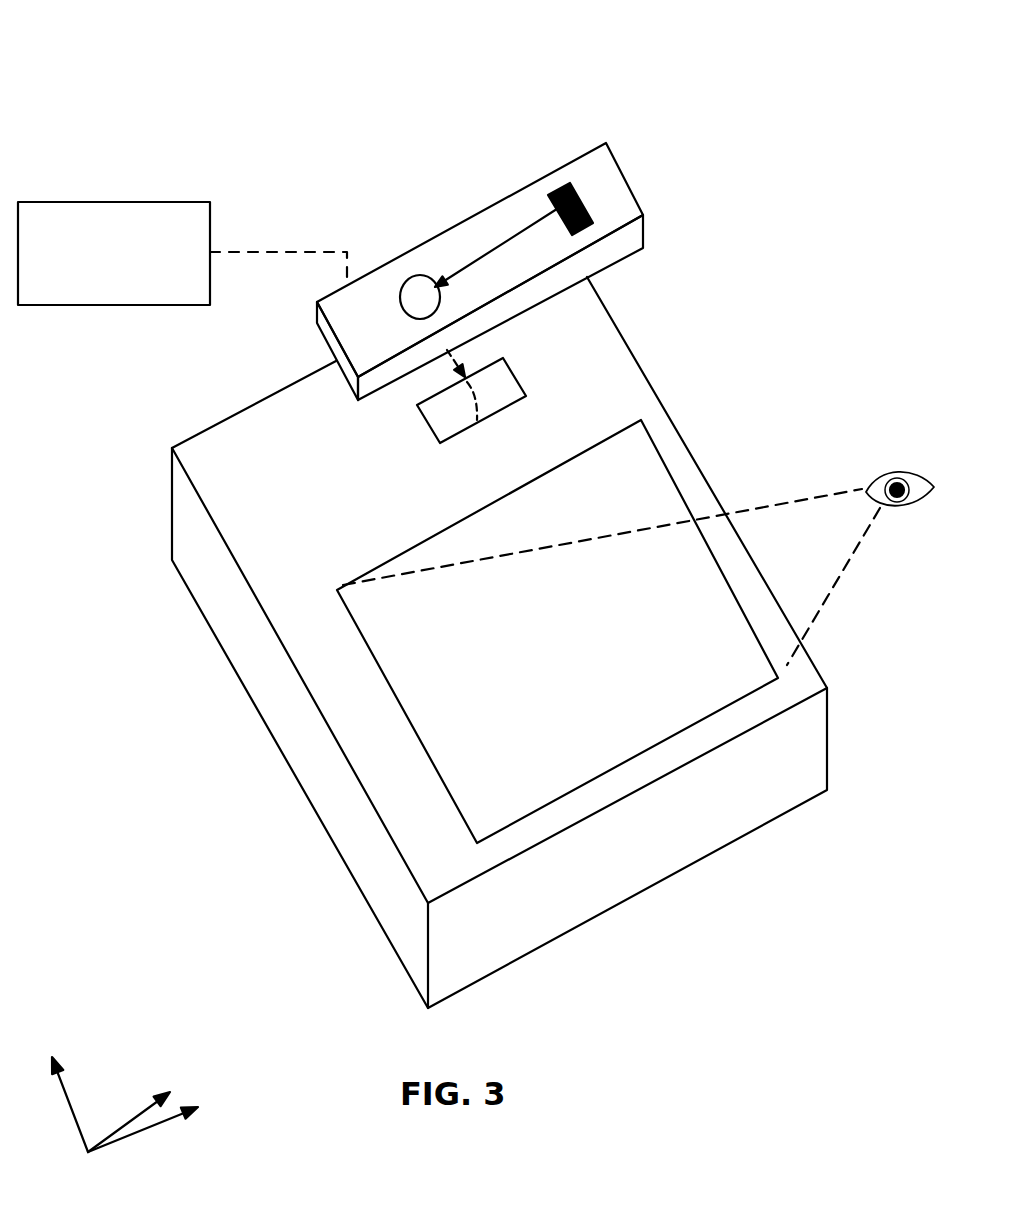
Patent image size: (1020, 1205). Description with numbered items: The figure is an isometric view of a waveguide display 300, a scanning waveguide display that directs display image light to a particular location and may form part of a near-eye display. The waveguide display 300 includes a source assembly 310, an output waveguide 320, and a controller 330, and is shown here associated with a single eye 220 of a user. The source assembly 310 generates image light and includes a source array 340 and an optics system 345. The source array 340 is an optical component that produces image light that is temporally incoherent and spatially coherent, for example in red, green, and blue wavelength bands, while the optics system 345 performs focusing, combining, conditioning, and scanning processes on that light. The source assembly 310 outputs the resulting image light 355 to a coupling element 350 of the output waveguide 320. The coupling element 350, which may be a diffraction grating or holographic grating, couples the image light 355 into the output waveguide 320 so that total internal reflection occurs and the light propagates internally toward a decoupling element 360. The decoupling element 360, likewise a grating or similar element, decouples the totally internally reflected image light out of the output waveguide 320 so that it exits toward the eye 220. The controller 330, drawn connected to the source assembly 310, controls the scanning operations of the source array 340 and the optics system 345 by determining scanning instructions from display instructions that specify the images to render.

The waveguide display 300 is at (53, 39).
The source assembly 310 is at (593, 217).
The output waveguide 320 is at (350, 758).
The controller 330 is at (93, 279).
The source array 340 is at (562, 185).
The optics system 345 is at (393, 214).
The coupling element 350 is at (527, 397).
The image light 355 is at (513, 373).
The decoupling element 360 is at (465, 826).
The eye 220 is at (791, 536).